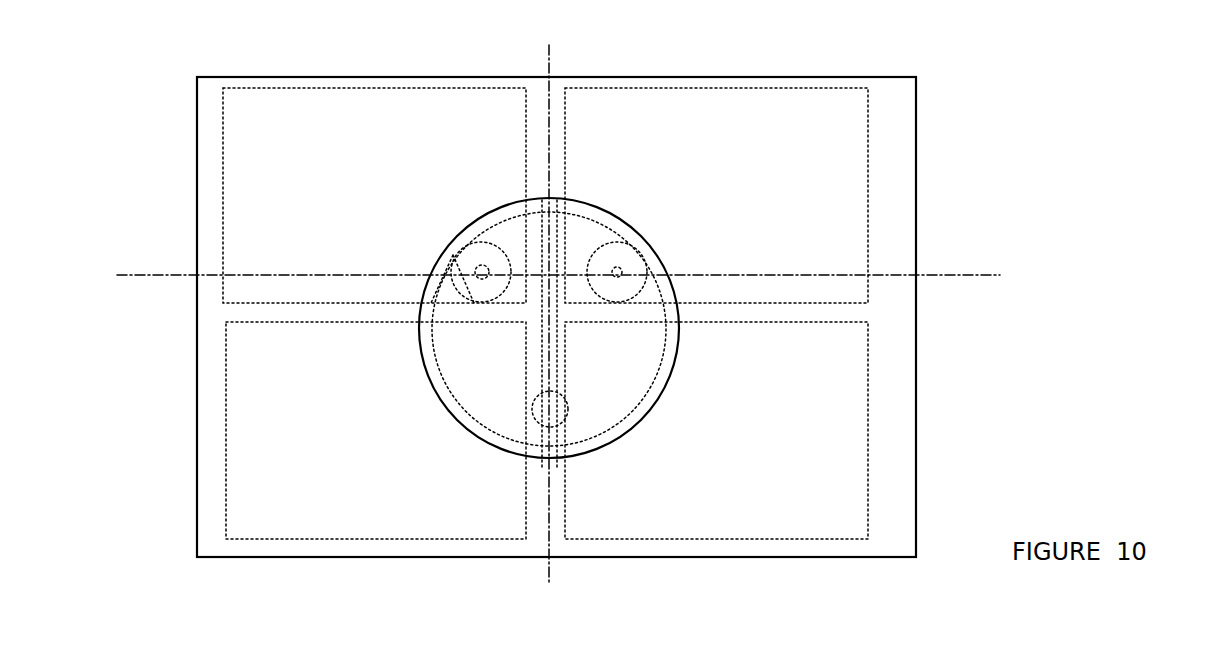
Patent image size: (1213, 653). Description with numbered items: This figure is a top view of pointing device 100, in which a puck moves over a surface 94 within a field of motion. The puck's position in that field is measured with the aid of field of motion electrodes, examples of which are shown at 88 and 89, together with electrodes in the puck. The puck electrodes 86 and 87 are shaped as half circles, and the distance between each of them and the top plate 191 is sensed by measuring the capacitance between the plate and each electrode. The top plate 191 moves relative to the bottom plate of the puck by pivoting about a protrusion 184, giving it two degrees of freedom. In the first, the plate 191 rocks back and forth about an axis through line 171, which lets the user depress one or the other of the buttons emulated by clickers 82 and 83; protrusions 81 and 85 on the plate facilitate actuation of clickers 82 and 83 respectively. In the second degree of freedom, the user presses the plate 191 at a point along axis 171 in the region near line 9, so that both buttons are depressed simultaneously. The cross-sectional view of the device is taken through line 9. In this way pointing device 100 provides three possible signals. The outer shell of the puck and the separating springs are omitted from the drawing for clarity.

The pointing device 100 is at (142, 68).
The surface 94 is at (899, 84).
The line 171 is at (549, 65).
The line 9- 9 is at (152, 265).
The field of motion electrode 88 is at (257, 117).
The field of motion electrode 89 is at (855, 137).
The puck electrode 86 is at (458, 363).
The puck electrode 87 is at (633, 365).
The top plate 191 is at (585, 199).
The clicker 82 is at (480, 262).
The protrusion 81 is at (480, 277).
The clicker 83 is at (613, 243).
The protrusion 85 is at (617, 270).
The protrusion 184 is at (535, 410).